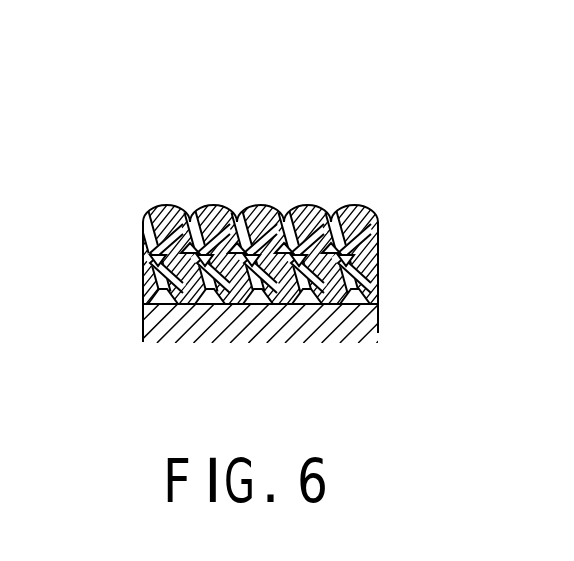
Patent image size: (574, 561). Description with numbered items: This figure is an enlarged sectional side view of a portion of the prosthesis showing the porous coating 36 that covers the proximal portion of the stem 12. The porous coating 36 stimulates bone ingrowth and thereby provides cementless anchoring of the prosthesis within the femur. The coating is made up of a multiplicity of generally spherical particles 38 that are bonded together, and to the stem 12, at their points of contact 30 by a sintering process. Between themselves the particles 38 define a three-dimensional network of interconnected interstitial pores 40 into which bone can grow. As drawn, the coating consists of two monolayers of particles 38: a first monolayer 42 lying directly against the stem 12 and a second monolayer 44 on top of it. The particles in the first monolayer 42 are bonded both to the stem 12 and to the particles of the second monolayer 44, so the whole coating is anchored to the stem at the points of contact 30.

The stem 12 is at (304, 330).
The points of contact 30 is at (238, 212).
The porous coating 36 is at (256, 272).
The spherical particles 38 is at (378, 212).
The interstitial pores 40 is at (321, 212).
The first monolayer 42 is at (386, 291).
The second monolayer 44 is at (386, 241).